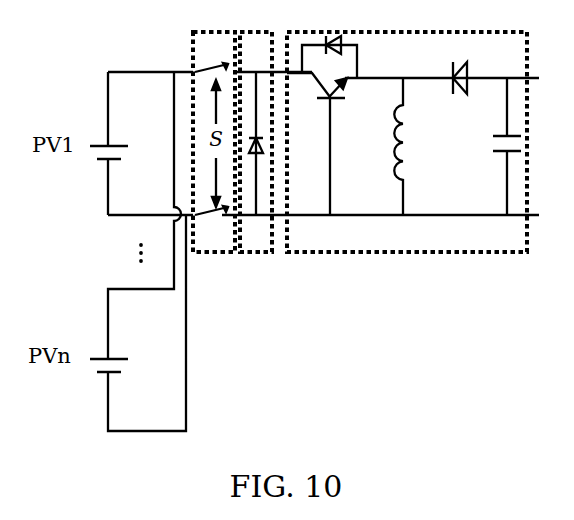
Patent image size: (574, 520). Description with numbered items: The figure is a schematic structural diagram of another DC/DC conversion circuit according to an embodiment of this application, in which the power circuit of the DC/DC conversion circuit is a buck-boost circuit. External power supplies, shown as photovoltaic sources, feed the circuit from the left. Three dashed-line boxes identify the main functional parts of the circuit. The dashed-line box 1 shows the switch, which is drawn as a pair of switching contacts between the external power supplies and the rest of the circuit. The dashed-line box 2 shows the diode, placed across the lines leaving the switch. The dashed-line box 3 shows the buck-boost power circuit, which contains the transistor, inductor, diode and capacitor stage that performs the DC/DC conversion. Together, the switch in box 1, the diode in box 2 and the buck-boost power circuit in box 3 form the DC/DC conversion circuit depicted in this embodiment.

The dashed-line box 1 is at (207, 255).
The dashed-line box 2 is at (250, 255).
The dashed-line box 3 is at (387, 255).